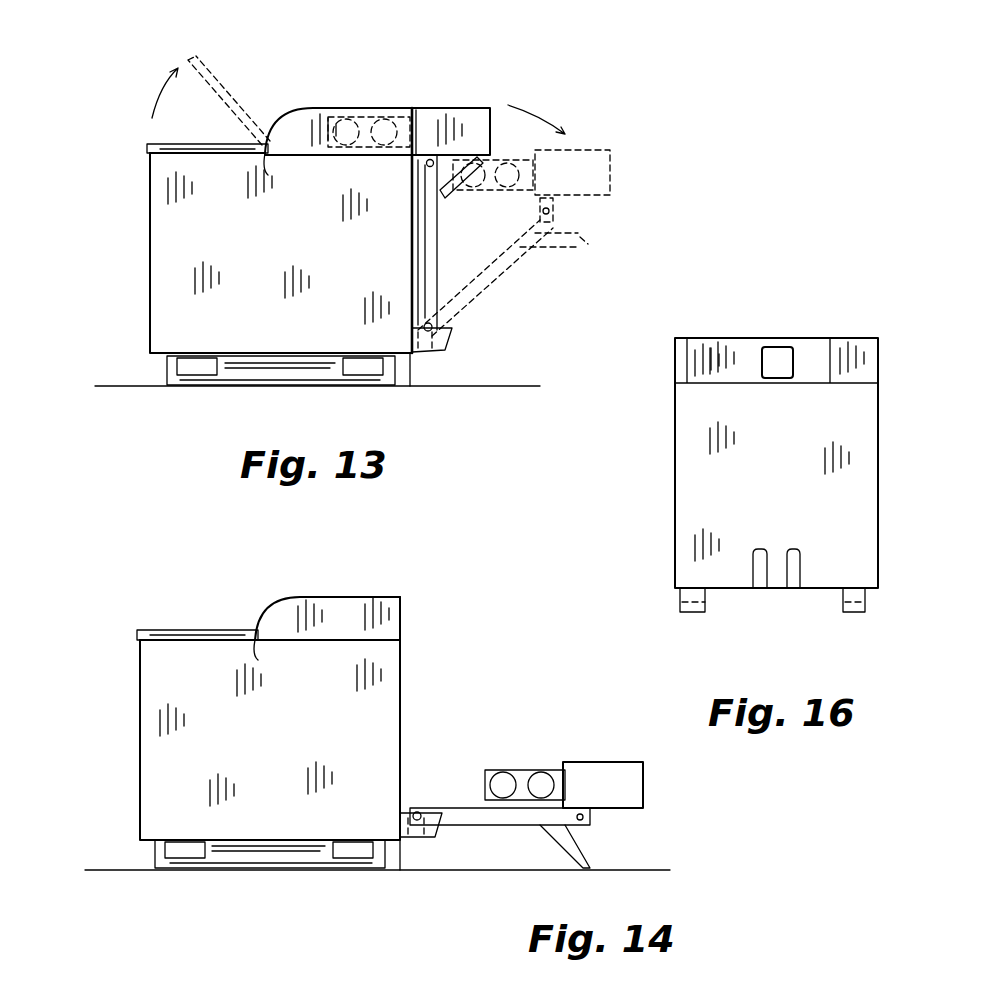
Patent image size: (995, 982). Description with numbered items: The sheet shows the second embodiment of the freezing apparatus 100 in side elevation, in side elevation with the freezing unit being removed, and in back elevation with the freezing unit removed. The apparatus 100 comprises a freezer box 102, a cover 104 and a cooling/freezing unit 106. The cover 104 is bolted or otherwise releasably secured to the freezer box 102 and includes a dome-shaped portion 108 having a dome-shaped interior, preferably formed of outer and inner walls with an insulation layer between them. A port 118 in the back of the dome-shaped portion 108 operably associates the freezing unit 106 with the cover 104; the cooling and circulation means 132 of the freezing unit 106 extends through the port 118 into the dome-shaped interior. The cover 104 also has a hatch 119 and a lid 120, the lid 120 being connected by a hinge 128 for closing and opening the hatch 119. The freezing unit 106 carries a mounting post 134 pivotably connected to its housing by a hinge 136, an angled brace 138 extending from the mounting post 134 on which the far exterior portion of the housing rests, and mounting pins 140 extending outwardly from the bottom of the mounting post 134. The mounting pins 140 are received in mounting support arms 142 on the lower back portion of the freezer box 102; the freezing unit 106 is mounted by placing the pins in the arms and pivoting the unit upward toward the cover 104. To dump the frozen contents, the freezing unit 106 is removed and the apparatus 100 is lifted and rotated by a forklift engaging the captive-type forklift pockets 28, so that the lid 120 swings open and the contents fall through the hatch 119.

In FIG. 13, the captive-type forklift pockets 28 is at (205, 375).
In FIG. 16, the captive-type forklift pockets 28 is at (682, 612).
In FIG. 14, the captive-type forklift pockets 28 is at (193, 858).
In FIG. 13, the freezing apparatus 100 is at (372, 66).
In FIG. 16, the freezing apparatus 100 is at (717, 327).
In FIG. 14, the freezing apparatus 100 is at (344, 583).
In FIG. 13, the freezer box 102 is at (178, 286).
In FIG. 16, the freezer box 102 is at (798, 514).
In FIG. 14, the freezer box 102 is at (165, 728).
In FIG. 13, the cover 104 is at (290, 128).
In FIG. 14, the cover 104 is at (300, 604).
In FIG. 13, the cooling/freezing unit 106 is at (477, 108).
In FIG. 14, the cooling/freezing unit 106 is at (606, 765).
In FIG. 13, the dome-shaped portion 108 is at (303, 110).
In FIG. 16, the dome-shaped portion 108 is at (680, 370).
In FIG. 14, the dome-shaped portion 108 is at (378, 602).
In FIG. 16, the port 118 is at (792, 355).
In FIG. 13, the hatch 119 is at (168, 145).
In FIG. 14, the hatch 119 is at (175, 630).
In FIG. 13, the lid 120 is at (211, 100).
In FIG. 13, the hinge 128 is at (268, 160).
In FIG. 14, the hinge 128 is at (258, 645).
In FIG. 13, the cooling and circulation means 132 is at (392, 124).
In FIG. 14, the cooling and circulation means 132 is at (528, 770).
In FIG. 13, the mounting post 134 is at (428, 262).
In FIG. 14, the mounting post 134 is at (525, 826).
In FIG. 13, the hinge 136 is at (425, 164).
In FIG. 13, the angled brace 138 is at (450, 188).
In FIG. 14, the angled brace 138 is at (585, 857).
In FIG. 13, the mounting pins 140 is at (432, 325).
In FIG. 14, the mounting pins 140 is at (416, 810).
In FIG. 13, the mounting support arms 142 is at (445, 350).
In FIG. 16, the mounting support arms 142 is at (792, 590).
In FIG. 14, the mounting support arms 142 is at (410, 838).